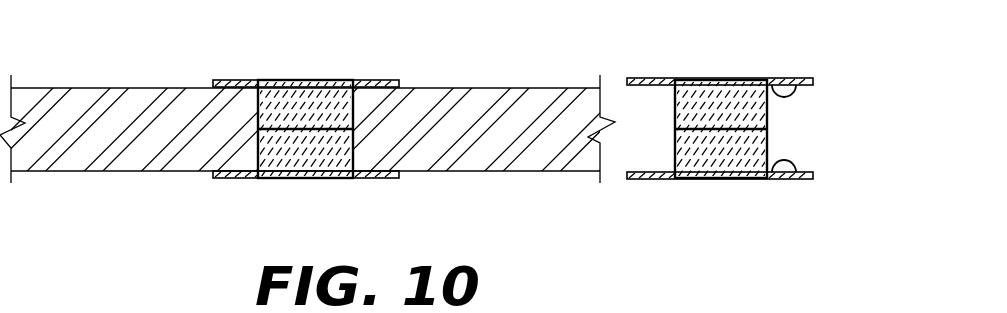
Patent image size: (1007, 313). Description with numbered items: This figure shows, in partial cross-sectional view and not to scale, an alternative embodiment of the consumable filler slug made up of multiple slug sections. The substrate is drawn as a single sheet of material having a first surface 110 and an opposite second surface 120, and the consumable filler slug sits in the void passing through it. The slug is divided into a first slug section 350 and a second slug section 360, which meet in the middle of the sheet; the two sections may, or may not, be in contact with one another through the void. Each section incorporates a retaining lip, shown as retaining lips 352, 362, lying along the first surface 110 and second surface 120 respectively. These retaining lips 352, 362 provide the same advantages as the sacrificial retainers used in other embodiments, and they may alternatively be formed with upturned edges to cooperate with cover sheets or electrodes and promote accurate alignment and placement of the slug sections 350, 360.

The first surface 110 is at (402, 83).
The second surface 120 is at (404, 177).
The first slug section 350 is at (257, 79).
The second slug section 360 is at (257, 179).
The retaining lip 352 is at (797, 85).
The retaining lip 362 is at (800, 172).